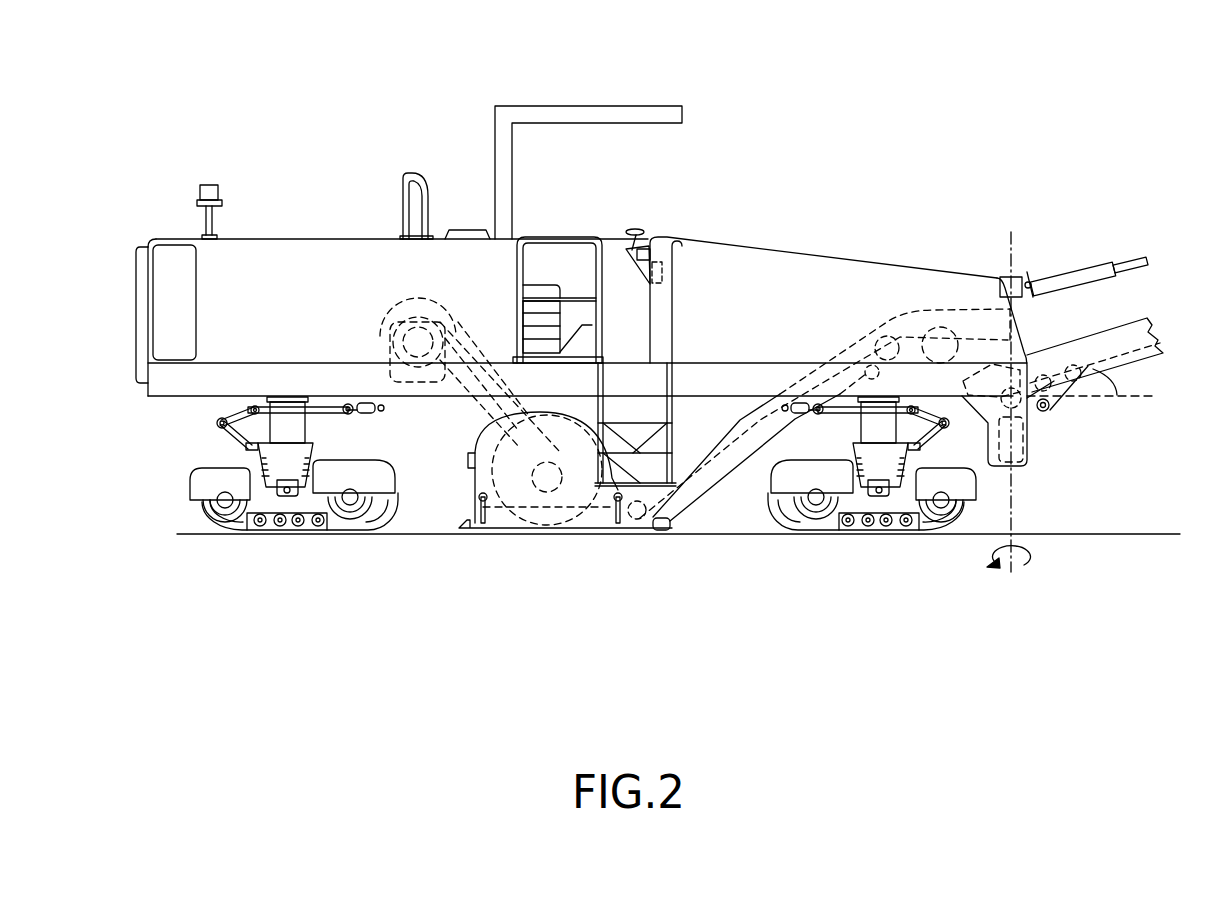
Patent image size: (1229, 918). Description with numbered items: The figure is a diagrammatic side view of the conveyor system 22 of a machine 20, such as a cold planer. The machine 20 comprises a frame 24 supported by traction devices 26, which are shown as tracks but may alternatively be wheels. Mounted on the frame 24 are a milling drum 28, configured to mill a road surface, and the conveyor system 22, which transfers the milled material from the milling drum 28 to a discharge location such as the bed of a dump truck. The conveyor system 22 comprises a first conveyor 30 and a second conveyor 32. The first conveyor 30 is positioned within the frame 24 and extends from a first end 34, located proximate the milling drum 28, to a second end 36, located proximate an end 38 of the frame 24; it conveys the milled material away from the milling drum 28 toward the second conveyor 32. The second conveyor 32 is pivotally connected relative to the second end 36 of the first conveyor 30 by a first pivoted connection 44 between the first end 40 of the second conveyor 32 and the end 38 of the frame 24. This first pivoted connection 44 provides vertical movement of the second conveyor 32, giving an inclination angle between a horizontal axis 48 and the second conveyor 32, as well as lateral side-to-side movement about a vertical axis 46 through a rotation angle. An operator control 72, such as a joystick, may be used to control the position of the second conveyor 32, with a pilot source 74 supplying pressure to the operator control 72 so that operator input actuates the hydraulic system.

The machine 20 is at (1048, 74).
The conveyor system 22 is at (1050, 256).
The frame 24 is at (765, 378).
The traction devices 26 is at (202, 503).
The milling drum 28 is at (552, 518).
The first conveyor 30 is at (735, 432).
The second conveyor 32 is at (1137, 347).
The first end 34 is at (629, 532).
The second end 36 is at (983, 330).
The end 38 is at (987, 273).
The first end 40 is at (987, 375).
The first pivoted connection 44 is at (1040, 440).
The vertical axis 46 is at (1017, 243).
The horizontal axis 48 is at (1130, 398).
The operator control 72 is at (633, 227).
The pilot source 74 is at (658, 278).